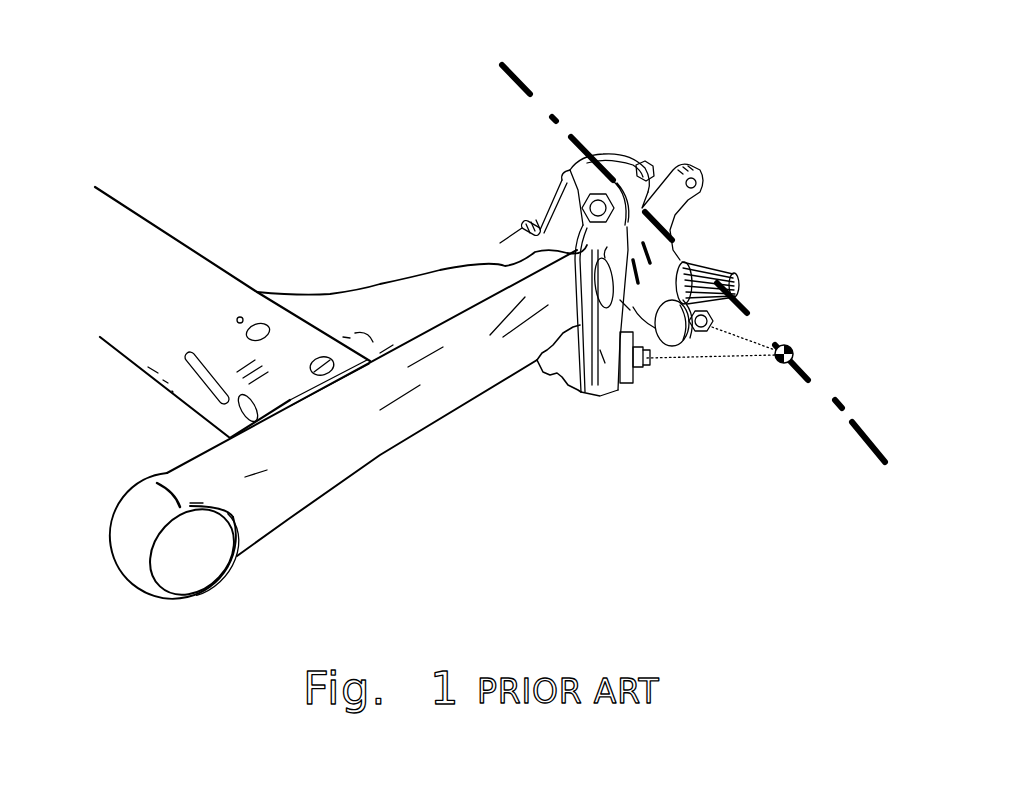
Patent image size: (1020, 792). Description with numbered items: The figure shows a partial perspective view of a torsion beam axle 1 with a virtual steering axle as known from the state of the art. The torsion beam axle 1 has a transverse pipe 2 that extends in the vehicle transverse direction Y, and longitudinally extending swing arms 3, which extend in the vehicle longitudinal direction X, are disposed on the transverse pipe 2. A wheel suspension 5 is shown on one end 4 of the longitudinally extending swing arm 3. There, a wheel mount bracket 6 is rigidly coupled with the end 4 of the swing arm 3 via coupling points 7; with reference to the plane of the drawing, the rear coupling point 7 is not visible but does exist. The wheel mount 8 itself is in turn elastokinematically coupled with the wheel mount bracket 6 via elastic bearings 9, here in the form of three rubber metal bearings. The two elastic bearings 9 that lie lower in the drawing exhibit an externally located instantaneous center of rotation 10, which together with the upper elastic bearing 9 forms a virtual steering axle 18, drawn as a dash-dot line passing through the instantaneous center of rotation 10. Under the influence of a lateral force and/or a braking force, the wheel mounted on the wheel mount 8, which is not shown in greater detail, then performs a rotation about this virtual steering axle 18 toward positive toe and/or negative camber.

The torsion beam axle 1 is at (256, 90).
The transverse pipe 2 is at (174, 277).
The longitudinally extending swing arm 3 is at (403, 436).
The end of the longitudinally extending swing arm 4 is at (560, 280).
The wheel suspension 5 is at (709, 93).
The wheel mount bracket 6 is at (572, 237).
The coupling points 7 is at (583, 196).
The wheel mount 8 is at (640, 318).
The elastic bearings 9 is at (631, 160).
The instantaneous center of rotation 10 is at (792, 345).
The virtual steering axle 18 is at (841, 402).